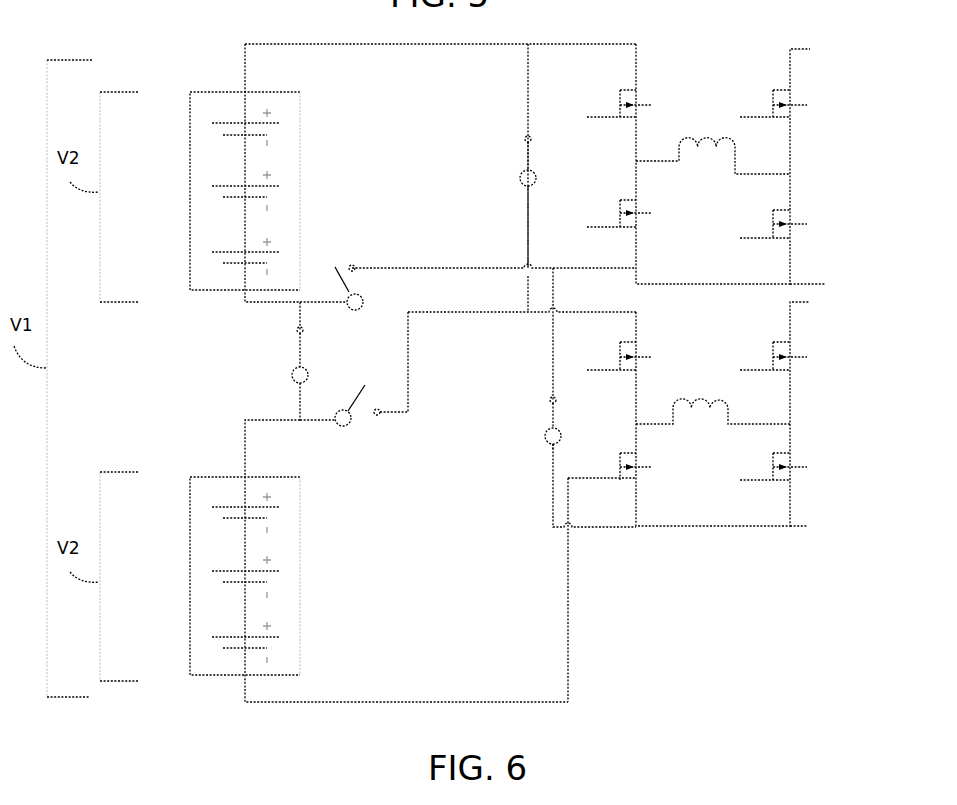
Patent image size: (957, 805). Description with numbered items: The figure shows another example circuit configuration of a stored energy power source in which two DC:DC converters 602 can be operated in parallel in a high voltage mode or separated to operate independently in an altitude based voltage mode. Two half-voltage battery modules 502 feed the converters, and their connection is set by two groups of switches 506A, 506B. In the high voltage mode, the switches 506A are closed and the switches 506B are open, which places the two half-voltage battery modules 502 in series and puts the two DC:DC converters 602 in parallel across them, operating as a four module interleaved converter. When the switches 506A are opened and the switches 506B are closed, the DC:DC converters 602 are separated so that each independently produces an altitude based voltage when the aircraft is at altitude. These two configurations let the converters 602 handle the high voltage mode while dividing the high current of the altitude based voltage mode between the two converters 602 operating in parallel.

The half-voltage battery module 502 is at (190, 175).
The switch 506A is at (293, 366).
The switch 506B is at (360, 305).
The DC:DC converter 602 is at (690, 42).